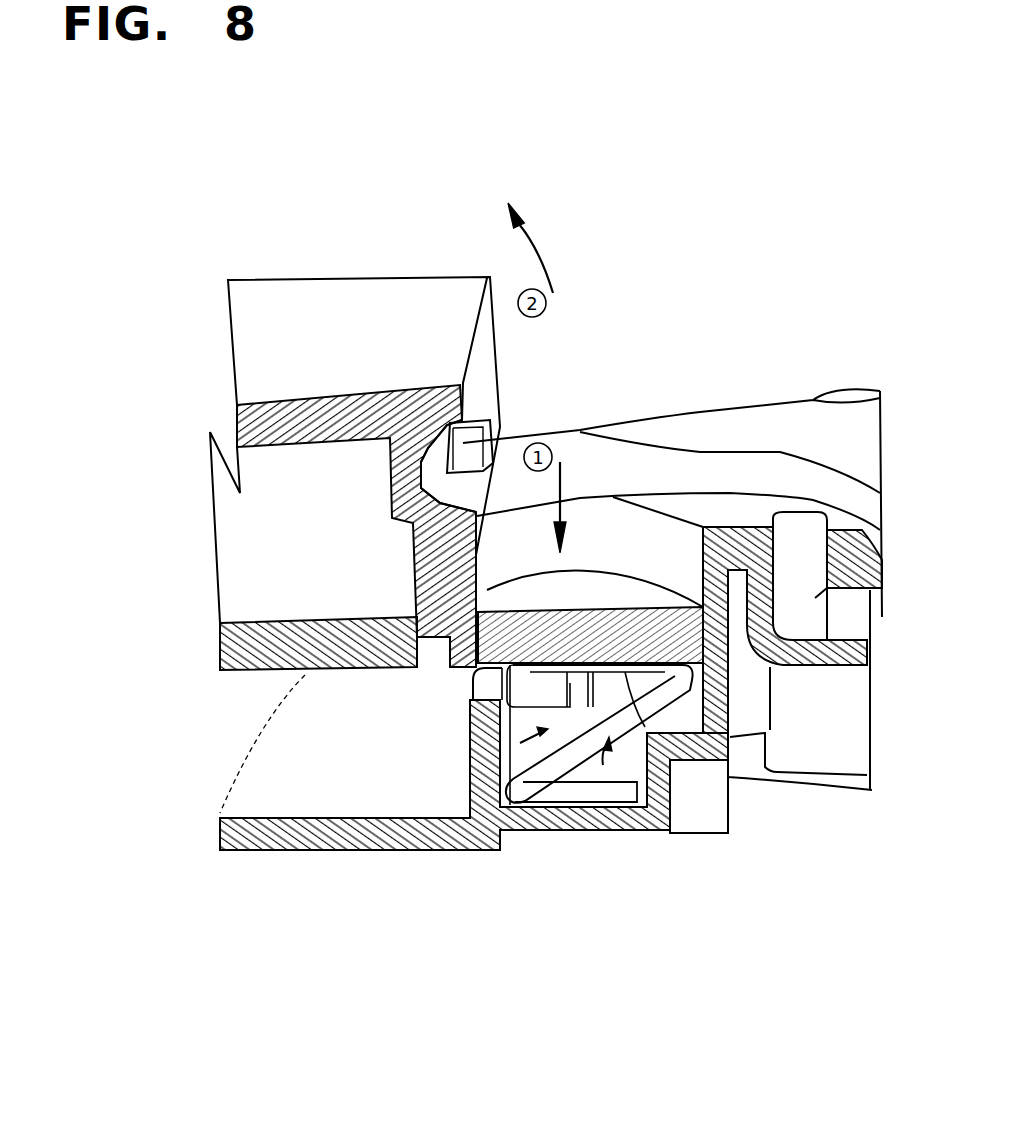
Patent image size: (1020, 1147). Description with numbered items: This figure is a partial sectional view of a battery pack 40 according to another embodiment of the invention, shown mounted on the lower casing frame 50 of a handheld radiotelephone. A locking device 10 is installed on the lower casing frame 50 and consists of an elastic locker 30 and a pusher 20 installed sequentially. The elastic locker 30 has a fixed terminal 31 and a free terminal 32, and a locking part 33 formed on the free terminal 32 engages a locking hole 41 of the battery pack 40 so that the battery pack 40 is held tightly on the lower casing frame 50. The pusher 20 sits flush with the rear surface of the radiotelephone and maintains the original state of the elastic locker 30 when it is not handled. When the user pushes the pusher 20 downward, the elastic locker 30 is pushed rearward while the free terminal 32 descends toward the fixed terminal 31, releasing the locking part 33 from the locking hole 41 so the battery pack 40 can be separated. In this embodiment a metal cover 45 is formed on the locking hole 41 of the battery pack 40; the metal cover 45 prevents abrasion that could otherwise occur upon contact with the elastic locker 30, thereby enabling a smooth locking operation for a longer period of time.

The locking device 10 is at (475, 850).
The pusher 20 is at (623, 592).
The elastic locker 30 is at (613, 807).
The fixed terminal 31 is at (567, 830).
The free terminal 32 is at (690, 762).
The locking part 33 is at (478, 690).
The battery pack 40 is at (343, 320).
The locking hole 41 is at (480, 433).
The metal cover 45 is at (490, 456).
The lower casing frame 50 is at (737, 423).